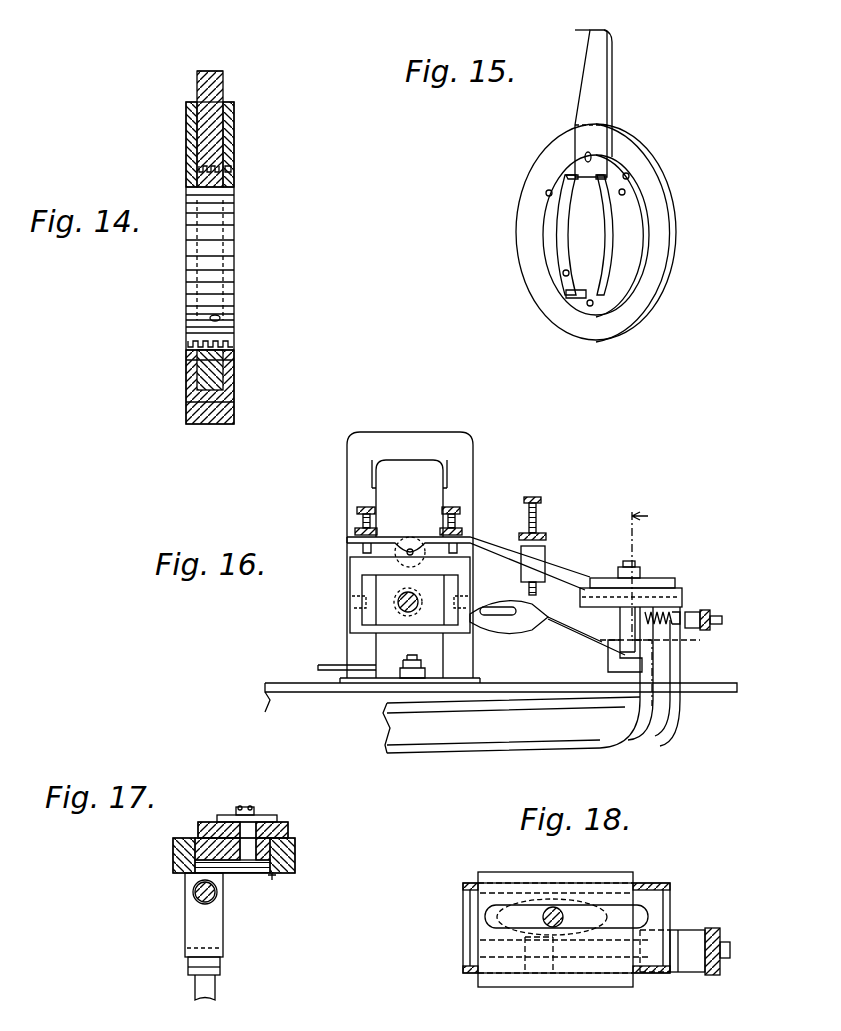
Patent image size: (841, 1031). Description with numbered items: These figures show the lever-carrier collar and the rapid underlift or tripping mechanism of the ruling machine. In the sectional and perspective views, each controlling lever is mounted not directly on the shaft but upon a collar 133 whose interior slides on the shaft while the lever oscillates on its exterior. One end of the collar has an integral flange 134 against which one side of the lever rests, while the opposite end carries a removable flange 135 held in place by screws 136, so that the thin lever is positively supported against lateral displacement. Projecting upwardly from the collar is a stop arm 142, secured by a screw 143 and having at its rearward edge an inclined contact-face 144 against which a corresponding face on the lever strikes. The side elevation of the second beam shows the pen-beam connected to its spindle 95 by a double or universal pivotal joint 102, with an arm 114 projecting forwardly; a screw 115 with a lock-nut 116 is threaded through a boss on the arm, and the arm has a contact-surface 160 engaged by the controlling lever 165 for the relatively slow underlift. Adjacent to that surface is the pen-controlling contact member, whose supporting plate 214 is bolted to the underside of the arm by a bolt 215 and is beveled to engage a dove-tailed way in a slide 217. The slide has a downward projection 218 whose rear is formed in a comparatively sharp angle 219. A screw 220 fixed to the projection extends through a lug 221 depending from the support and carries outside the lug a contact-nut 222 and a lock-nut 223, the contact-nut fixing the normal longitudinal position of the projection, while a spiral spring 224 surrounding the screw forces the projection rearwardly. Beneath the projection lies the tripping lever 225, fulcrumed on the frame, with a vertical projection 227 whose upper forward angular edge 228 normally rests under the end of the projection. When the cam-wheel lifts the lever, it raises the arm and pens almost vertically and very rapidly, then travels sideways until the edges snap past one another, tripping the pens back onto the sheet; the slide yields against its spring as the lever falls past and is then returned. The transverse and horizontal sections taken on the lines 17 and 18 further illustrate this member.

In FIG. 14, the stop arm 142 is at (218, 92).
In FIG. 15, the stop arm 142 is at (610, 105).
In FIG. 14, the screw 143 is at (232, 168).
In FIG. 15, the inclined contact-face 144 is at (577, 70).
In FIG. 14, the collar 133 is at (193, 297).
In FIG. 15, the collar 133 is at (562, 240).
In FIG. 14, the integral flange 134 is at (236, 368).
In FIG. 15, the integral flange 134 is at (677, 235).
In FIG. 14, the removable flange 135 is at (146, 376).
In FIG. 14, the screws 136 is at (197, 354).
In FIG. 16, the double or universal pivotal joint 102 is at (350, 565).
In FIG. 16, the spindle 95 is at (398, 602).
In FIG. 16, the arm 114 is at (572, 570).
In FIG. 17, the arm 114 is at (270, 828).
In FIG. 16, the screw 115 is at (540, 498).
In FIG. 16, the lock-nut 116 is at (540, 534).
In FIG. 16, the section line 18— 18 is at (754, 598).
In FIG. 16, the section line 17— 17 is at (678, 712).
In FIG. 16, the supporting plate 214 is at (604, 590).
In FIG. 17, the supporting plate 214 is at (296, 855).
In FIG. 18, the supporting plate 214 is at (465, 885).
In FIG. 16, the bolt 215 is at (640, 572).
In FIG. 17, the bolt 215 is at (245, 808).
In FIG. 18, the bolt 215 is at (560, 910).
In FIG. 16, the slide 217 is at (580, 597).
In FIG. 17, the slide 217 is at (172, 855).
In FIG. 18, the slide 217 is at (497, 862).
In FIG. 16, the downward projection 218 is at (640, 612).
In FIG. 17, the downward projection 218 is at (224, 940).
In FIG. 18, the downward projection 218 is at (530, 972).
In FIG. 16, the sharp angle 219 is at (670, 660).
In FIG. 17, the screw 220 is at (196, 895).
In FIG. 18, the screw 220 is at (730, 950).
In FIG. 16, the lug 221 is at (680, 602).
In FIG. 16, the contact-nut 222 is at (700, 614).
In FIG. 18, the contact-nut 222 is at (690, 934).
In FIG. 16, the lock-nut 223 is at (708, 628).
In FIG. 18, the lock-nut 223 is at (718, 930).
In FIG. 16, the spiral spring 224 is at (672, 641).
In FIG. 17, the spiral spring 224 is at (200, 904).
In FIG. 16, the lever 225 is at (620, 736).
In FIG. 16, the vertical projection 227 is at (610, 658).
In FIG. 17, the vertical projection 227 is at (222, 962).
In FIG. 16, the angular edge 228 is at (627, 614).
In FIG. 16, the controlling lever 165 is at (698, 692).
In FIG. 17, the contact-surface 160 is at (272, 876).